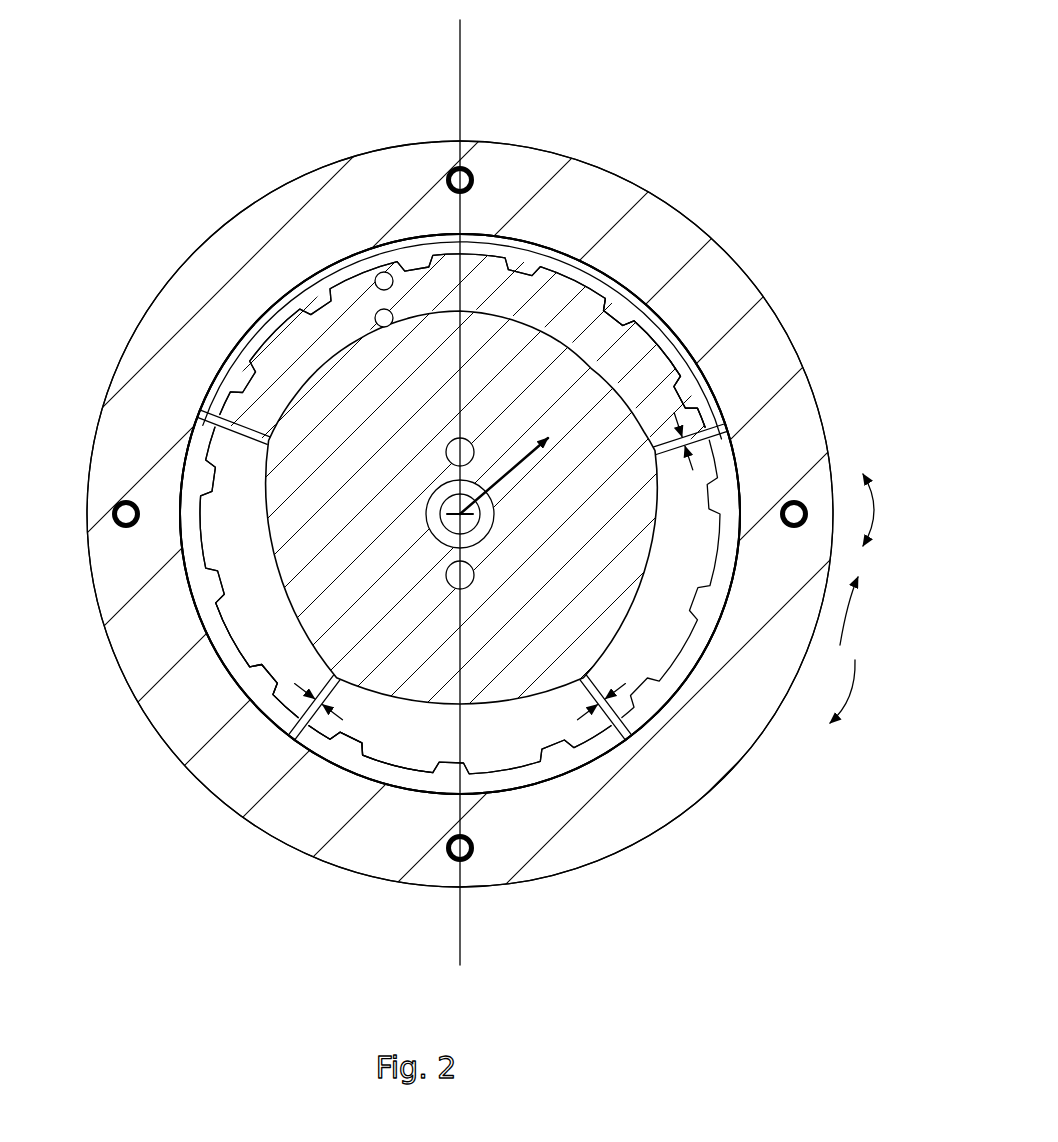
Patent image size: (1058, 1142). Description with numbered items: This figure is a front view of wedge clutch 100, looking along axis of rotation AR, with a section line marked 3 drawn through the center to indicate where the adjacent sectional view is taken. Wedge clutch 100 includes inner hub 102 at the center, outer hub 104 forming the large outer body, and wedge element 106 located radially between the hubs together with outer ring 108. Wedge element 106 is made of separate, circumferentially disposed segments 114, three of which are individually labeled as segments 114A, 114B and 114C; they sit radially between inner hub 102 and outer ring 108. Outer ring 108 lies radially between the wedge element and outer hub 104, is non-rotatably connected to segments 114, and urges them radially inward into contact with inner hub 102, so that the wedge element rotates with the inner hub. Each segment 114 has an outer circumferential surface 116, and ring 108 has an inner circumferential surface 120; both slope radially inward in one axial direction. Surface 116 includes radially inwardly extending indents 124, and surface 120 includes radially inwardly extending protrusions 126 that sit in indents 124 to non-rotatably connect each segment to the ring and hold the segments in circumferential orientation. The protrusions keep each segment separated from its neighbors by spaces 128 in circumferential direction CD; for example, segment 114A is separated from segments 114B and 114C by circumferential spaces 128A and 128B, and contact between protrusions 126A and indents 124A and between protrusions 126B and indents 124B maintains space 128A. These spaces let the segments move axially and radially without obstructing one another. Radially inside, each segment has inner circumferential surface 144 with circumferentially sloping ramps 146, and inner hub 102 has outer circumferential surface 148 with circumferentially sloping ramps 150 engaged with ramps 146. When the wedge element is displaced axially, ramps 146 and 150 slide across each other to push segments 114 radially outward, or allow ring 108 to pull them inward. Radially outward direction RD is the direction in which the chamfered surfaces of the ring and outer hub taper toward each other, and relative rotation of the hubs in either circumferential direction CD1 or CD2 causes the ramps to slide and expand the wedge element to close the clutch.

The wedge clutch 100 is at (689, 72).
The inner hub 102 is at (352, 350).
The outer hub 104 is at (231, 212).
The wedge element 106 is at (566, 262).
The outer ring 108 is at (622, 270).
The segment 114 is at (588, 358).
The segment 114A is at (486, 743).
The segment 114B is at (218, 578).
The segment 114C is at (636, 628).
The outer circumferential surface 116 is at (358, 272).
The inner circumferential surface 120 is at (393, 266).
The indent 124 is at (683, 386).
The indent 124A is at (250, 627).
The indent 124B is at (385, 752).
The protrusion 126 is at (508, 260).
The protrusion 126A is at (214, 598).
The protrusion 126B is at (350, 745).
The space 128 is at (718, 445).
The circumferential space 128A is at (318, 705).
The circumferential space 128B is at (612, 705).
The inner circumferential surface 144 is at (275, 423).
The ramp 146 is at (325, 300).
The outer circumferential surface 148 is at (386, 291).
The ramp 150 is at (394, 327).
The section line 3- 3 is at (460, 22).
The axis of rotation AR is at (495, 556).
The radially outward direction RD is at (537, 450).
The circumferential direction CD is at (873, 508).
The circumferential direction CD1 is at (852, 620).
The circumferential direction CD2 is at (850, 693).